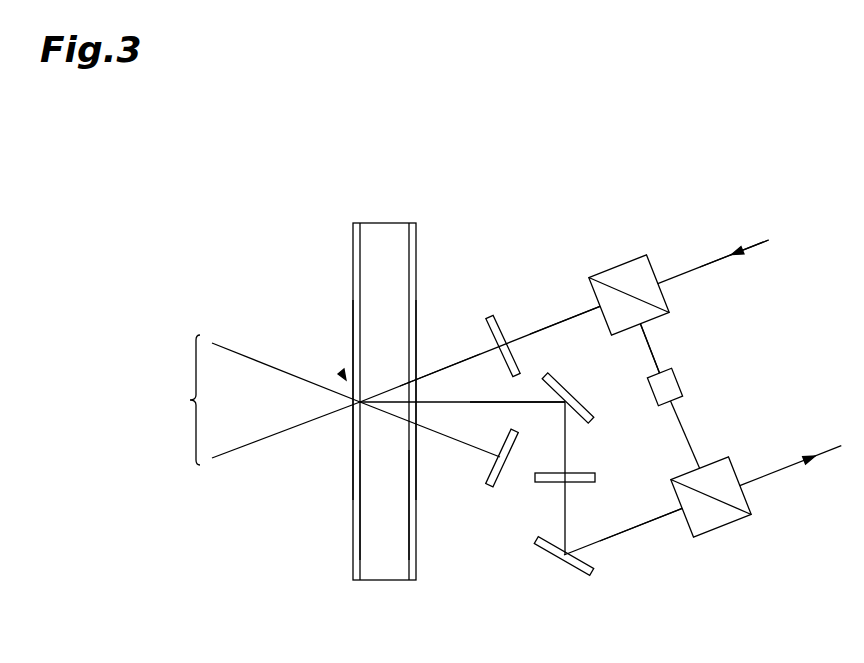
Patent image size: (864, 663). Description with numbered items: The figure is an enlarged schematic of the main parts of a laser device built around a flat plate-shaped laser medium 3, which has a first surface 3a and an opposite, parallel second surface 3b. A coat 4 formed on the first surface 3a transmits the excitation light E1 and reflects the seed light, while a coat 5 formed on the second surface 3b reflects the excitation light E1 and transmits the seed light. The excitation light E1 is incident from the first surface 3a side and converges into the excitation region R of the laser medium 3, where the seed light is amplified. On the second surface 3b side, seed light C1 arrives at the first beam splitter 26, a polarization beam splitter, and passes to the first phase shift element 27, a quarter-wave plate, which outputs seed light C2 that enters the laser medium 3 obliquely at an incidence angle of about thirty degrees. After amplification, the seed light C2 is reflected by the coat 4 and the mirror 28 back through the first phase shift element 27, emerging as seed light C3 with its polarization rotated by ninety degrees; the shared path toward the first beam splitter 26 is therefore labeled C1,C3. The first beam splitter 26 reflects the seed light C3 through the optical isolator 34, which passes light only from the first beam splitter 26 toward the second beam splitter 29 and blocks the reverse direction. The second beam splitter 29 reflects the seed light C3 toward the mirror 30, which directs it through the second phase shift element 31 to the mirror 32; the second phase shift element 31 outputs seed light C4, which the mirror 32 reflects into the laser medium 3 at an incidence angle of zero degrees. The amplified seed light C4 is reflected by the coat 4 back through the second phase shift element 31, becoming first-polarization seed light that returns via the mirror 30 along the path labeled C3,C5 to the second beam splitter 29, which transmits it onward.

The laser medium 3 is at (384, 222).
The first surface 3a is at (360, 553).
The second surface 3b is at (409, 553).
The coat 4 is at (353, 512).
The coat 5 is at (416, 512).
The excitation light E1 is at (256, 400).
The excitation region R is at (341, 370).
The seed light C1 is at (712, 258).
The seed light C2 is at (455, 364).
The seed light C3 is at (653, 343).
The seed light C4 is at (522, 400).
The seed light C1,C3 is at (560, 323).
The seed light C3,C5 is at (637, 531).
The first beam splitter 26 is at (637, 253).
The first phase shift element 27 is at (500, 316).
The mirror 28 is at (497, 482).
The second beam splitter 29 is at (725, 529).
The mirror 30 is at (573, 576).
The second phase shift element 31 is at (595, 470).
The mirror 32 is at (594, 405).
The optical isolator 34 is at (684, 388).